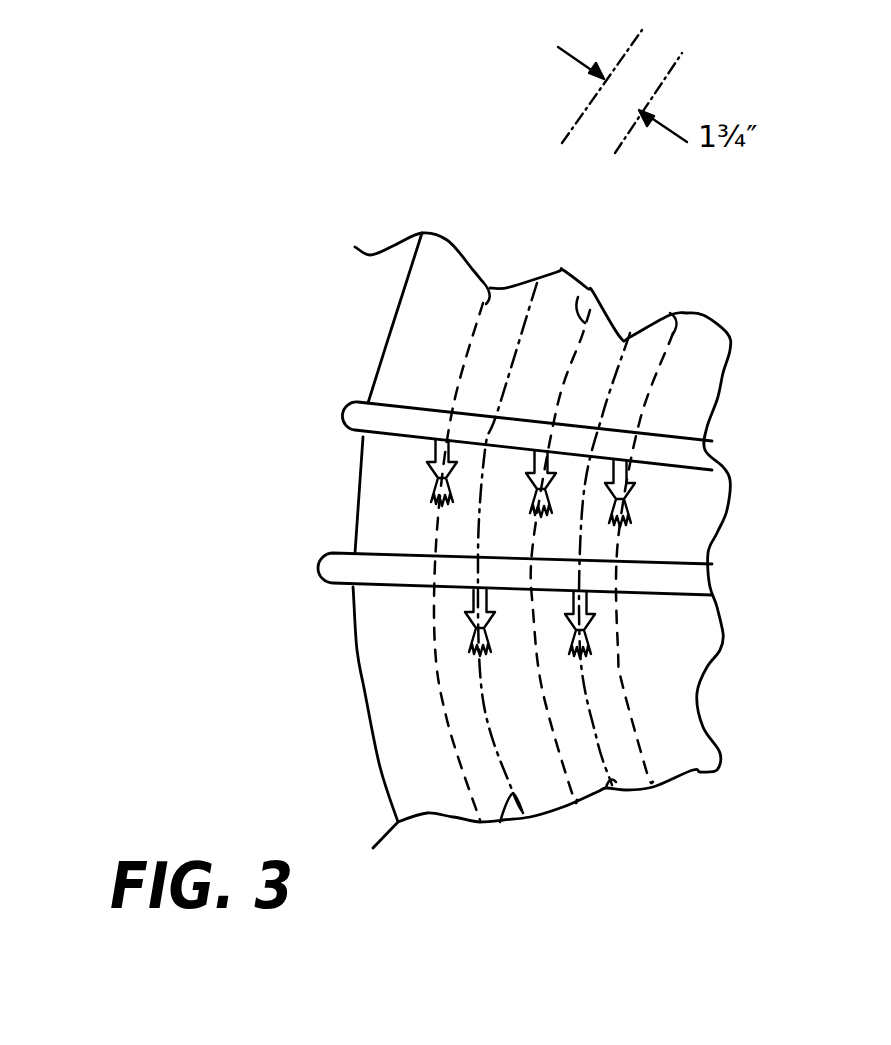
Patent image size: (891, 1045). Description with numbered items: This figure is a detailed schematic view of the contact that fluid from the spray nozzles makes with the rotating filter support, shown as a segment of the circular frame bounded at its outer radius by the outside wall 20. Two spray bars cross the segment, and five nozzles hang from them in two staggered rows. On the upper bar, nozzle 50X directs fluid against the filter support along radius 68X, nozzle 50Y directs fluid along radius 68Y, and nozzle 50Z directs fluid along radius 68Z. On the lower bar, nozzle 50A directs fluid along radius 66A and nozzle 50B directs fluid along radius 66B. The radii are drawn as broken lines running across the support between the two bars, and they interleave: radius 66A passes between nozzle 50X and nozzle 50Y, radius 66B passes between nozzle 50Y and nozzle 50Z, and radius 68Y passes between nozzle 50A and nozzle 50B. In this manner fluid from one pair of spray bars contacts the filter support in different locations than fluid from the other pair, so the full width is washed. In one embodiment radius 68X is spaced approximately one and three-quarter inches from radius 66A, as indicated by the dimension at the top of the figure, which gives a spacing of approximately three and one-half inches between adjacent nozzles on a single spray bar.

The outside wall 20 is at (390, 330).
The nozzle 50X is at (428, 478).
The nozzle 50Y is at (556, 476).
The nozzle 50Z is at (636, 487).
The nozzle 50A is at (465, 612).
The nozzle 50B is at (595, 614).
The radius 68X is at (473, 277).
The radius 68Y is at (578, 297).
The radius 68Z is at (670, 313).
The radius 66A is at (503, 821).
The radius 66B is at (607, 789).